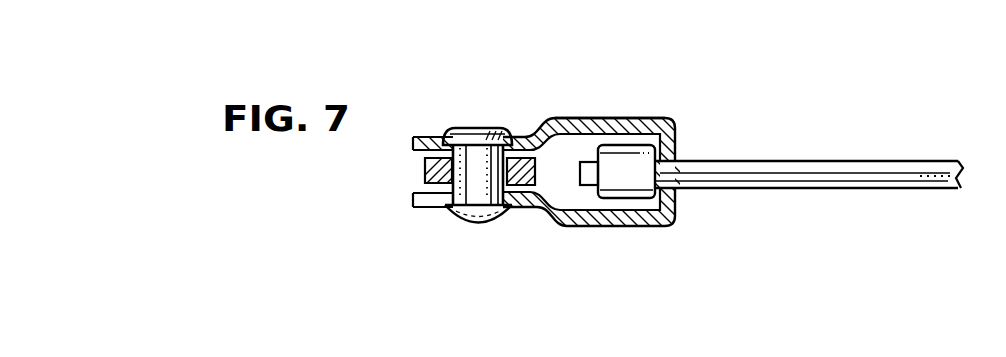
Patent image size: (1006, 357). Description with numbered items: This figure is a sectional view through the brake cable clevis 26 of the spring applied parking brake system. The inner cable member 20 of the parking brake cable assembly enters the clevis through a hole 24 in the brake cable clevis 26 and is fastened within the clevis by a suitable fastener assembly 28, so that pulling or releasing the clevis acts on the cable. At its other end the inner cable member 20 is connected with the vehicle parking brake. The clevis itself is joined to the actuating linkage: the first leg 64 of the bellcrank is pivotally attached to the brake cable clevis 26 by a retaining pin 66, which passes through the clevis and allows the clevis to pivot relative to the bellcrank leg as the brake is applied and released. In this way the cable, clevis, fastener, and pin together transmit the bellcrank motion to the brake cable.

The inner cable member 20 is at (827, 165).
The hole 24 is at (676, 128).
The brake cable clevis 26 is at (605, 121).
The fastener assembly 28 is at (626, 196).
The first leg 64 is at (425, 170).
The retaining pin 66 is at (470, 210).